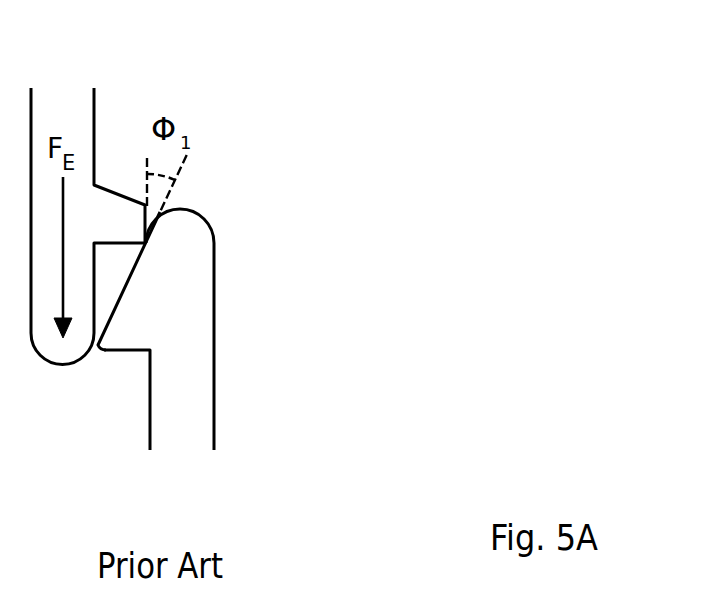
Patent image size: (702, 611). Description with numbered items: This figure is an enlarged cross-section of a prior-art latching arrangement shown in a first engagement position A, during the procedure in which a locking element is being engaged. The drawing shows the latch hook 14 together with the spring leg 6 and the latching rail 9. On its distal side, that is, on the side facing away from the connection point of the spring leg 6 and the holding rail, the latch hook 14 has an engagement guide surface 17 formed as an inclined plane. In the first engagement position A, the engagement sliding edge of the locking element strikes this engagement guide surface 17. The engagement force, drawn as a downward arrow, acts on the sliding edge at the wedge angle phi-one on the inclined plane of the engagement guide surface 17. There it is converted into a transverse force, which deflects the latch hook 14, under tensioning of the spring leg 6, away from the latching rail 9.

The latching rail 9 is at (76, 100).
The spring leg 6 is at (197, 447).
The latch hook 14 is at (183, 252).
The engagement guide surface 17 is at (142, 260).
The first engagement position A is at (253, 122).